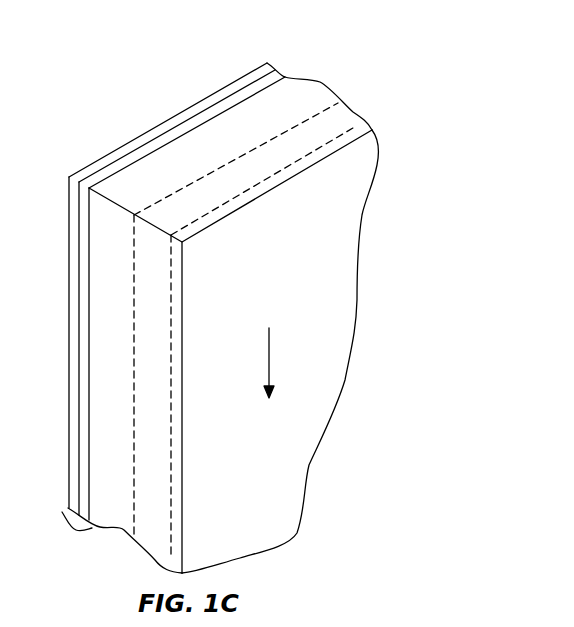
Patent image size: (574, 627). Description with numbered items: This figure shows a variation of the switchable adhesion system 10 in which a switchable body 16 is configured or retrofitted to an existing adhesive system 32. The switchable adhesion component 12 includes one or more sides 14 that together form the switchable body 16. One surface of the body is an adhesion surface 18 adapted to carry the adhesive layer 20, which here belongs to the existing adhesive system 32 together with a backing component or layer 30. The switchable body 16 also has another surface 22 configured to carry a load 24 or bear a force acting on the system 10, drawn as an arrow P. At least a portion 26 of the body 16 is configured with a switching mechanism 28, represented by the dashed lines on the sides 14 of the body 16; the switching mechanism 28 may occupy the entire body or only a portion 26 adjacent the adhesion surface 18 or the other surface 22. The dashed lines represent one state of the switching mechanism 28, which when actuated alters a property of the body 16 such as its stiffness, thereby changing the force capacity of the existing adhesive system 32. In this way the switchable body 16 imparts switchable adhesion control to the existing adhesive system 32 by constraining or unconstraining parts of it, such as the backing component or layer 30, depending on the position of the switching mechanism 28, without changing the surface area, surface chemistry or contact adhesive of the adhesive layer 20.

The switchable adhesion system 10 is at (336, 59).
The switchable adhesion component 12 is at (297, 95).
The sides 14 is at (104, 370).
The switchable body 16 is at (358, 247).
The adhesion surface 18 is at (133, 162).
The adhesive layer 20 is at (230, 88).
The surface 22 is at (313, 299).
The load 24 is at (269, 347).
The portion 26 is at (335, 117).
The switching mechanism 28 is at (134, 302).
The backing component or layer 30 is at (187, 124).
The existing adhesive system 32 is at (75, 528).